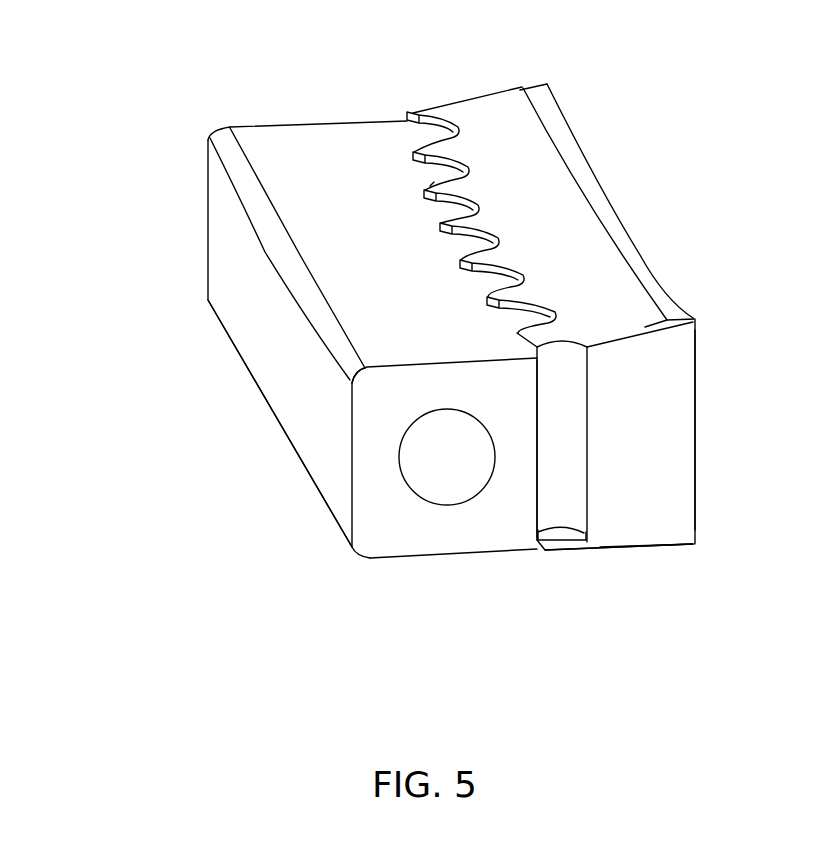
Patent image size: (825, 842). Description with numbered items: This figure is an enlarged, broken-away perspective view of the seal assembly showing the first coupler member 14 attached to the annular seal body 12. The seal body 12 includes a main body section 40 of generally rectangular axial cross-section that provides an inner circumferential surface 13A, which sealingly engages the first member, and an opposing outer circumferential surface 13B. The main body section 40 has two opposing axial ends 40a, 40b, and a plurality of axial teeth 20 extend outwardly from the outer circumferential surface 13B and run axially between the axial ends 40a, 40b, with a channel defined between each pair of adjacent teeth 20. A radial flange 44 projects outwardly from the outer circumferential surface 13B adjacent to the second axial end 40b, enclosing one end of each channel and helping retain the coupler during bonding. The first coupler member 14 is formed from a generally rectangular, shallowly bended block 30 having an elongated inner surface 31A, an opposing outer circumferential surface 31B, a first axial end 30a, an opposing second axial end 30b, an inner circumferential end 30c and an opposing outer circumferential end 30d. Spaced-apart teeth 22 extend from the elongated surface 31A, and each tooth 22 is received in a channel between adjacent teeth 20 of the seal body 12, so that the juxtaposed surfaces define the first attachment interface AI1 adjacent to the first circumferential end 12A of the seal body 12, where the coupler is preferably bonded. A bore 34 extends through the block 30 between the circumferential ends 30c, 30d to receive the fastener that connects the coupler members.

The annular seal body 12 is at (722, 355).
The first circumferential end of seal body 12A is at (638, 523).
The inner circumferential surface 13A is at (698, 432).
The outer circumferential surface 13B is at (585, 503).
The first coupler member 14 is at (193, 444).
The axial teeth of seal body 20 is at (421, 112).
The teeth of first coupler member 22 is at (437, 174).
The block of first coupler member 30 is at (248, 325).
The first axial end of block 30a is at (338, 162).
The second axial end of block 30b is at (323, 500).
The inner circumferential end of block 30c is at (406, 544).
The outer circumferential end of block 30d is at (280, 120).
The elongated surface of block 31A is at (488, 259).
The outer circumferential surface of block 31B is at (268, 393).
The bore 34 is at (437, 487).
The main body section 40 is at (680, 498).
The first axial end of main body section 40a is at (626, 306).
The second axial end of main body section 40b is at (620, 552).
The radial flange 44 is at (562, 548).
The first attachment interface AI1 is at (473, 193).